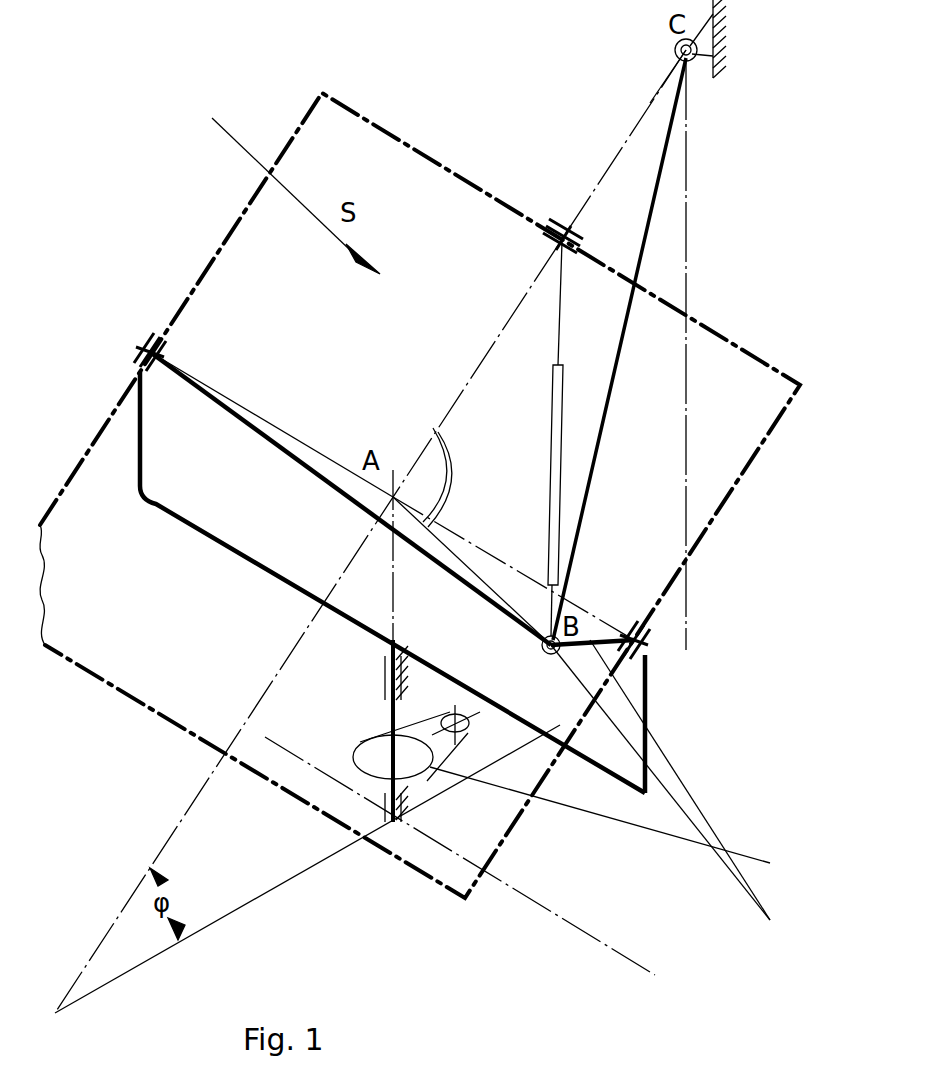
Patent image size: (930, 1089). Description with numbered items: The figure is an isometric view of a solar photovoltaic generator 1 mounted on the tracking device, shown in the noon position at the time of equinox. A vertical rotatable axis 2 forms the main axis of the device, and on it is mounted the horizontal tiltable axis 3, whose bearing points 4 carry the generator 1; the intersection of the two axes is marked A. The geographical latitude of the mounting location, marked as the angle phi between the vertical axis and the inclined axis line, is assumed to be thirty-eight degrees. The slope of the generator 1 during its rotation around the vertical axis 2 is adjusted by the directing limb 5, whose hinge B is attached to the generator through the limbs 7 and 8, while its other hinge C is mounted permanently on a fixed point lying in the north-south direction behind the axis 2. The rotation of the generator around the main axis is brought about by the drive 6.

The generator 1 is at (733, 453).
The vertical rotatable axis 2 is at (440, 712).
The horizontal tiltable axis 3 is at (250, 420).
The bearing points 4 is at (150, 345).
The directing limb 5 is at (651, 208).
The drive 6 is at (611, 824).
The limb 7 is at (671, 798).
The limb 8 is at (565, 318).